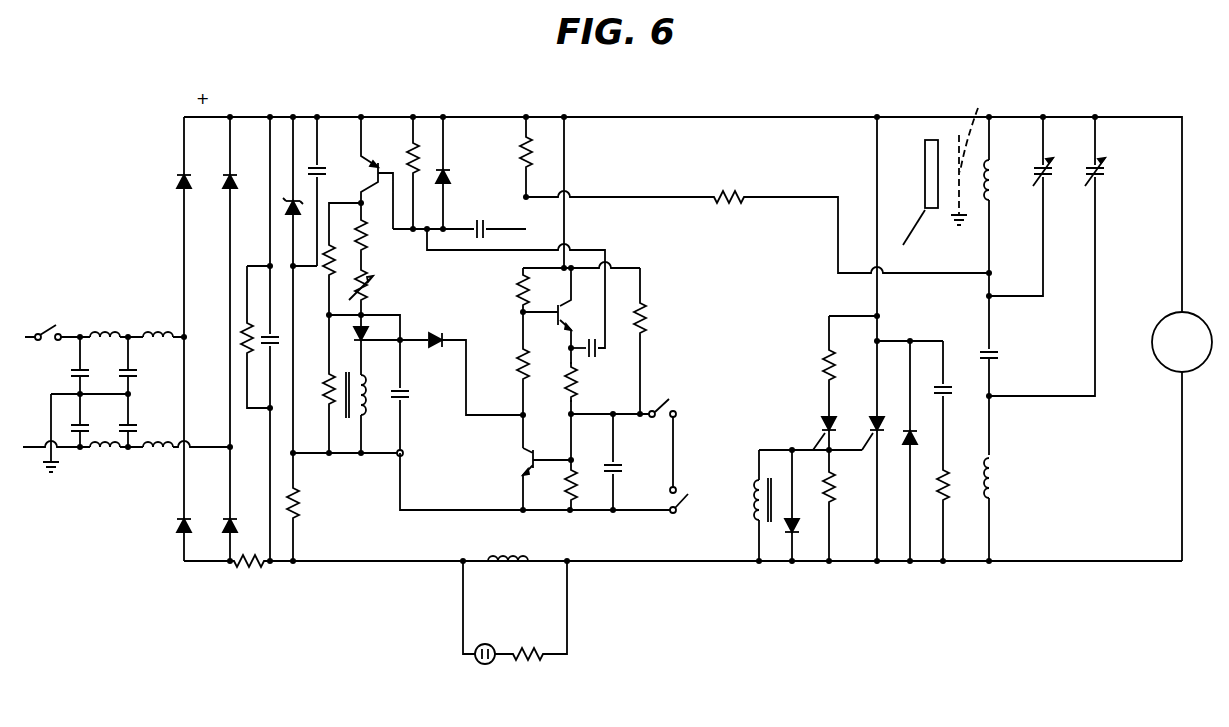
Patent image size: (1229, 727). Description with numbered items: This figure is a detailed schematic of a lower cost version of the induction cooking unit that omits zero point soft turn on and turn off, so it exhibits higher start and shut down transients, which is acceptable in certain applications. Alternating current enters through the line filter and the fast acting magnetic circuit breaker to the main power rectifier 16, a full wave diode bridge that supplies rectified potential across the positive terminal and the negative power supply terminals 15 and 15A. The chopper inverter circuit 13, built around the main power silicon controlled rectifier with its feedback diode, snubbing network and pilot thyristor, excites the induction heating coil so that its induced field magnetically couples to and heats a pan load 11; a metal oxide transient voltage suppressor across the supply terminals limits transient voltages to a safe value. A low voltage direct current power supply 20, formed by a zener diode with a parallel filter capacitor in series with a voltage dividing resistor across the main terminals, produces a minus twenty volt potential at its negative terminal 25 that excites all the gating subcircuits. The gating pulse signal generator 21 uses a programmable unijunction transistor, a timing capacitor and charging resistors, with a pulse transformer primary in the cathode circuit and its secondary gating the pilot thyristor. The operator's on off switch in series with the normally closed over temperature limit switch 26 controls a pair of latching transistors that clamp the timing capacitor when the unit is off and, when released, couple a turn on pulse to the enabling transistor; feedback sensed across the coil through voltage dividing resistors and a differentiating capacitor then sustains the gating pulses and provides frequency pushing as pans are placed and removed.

The pan 11 is at (931, 140).
The chopper inverter circuit 13 is at (900, 339).
The power supply terminal 15 is at (392, 563).
The power supply terminal 15A is at (678, 563).
The main power rectifier 16 is at (200, 339).
The low voltage direct current power supply 20 is at (334, 339).
The gating pulse signal generator 21 is at (368, 398).
The negative terminal of low voltage direct current power supply 25 is at (329, 455).
The over temperature limit switch 26 is at (669, 399).